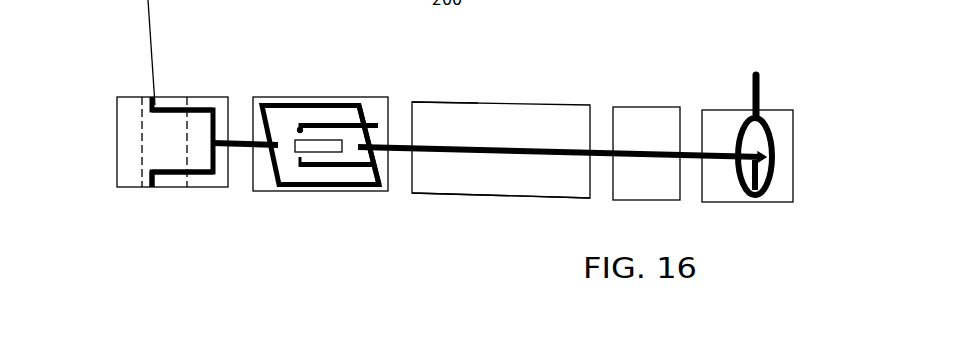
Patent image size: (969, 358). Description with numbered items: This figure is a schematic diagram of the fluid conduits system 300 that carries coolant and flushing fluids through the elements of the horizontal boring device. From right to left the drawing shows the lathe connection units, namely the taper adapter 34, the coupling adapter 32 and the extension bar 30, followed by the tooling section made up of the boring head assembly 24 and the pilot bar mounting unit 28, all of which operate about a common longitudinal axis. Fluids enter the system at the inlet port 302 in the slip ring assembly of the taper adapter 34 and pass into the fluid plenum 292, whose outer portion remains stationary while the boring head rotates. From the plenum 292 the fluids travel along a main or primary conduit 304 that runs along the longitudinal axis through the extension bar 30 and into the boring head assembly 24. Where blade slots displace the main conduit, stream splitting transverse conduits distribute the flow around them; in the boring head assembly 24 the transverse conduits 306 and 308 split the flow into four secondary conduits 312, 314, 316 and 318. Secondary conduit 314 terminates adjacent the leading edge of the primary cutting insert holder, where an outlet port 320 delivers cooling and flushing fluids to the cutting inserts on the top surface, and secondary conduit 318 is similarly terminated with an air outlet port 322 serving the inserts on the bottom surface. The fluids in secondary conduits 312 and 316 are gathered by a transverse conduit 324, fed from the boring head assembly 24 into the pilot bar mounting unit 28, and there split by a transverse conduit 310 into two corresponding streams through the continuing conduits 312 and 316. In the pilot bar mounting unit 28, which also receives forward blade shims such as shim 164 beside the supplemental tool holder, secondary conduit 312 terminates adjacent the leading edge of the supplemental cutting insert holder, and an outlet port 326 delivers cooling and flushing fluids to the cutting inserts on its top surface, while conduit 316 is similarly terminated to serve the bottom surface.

The boring head assembly 24 is at (383, 110).
The pilot bar mounting unit 28 is at (127, 107).
The extension bar 30 is at (553, 123).
The coupling adapter 32 is at (645, 123).
The taper adapter 34 is at (718, 118).
The forward blade shim 164 is at (323, 0).
The fluid plenum 292 is at (774, 143).
The fluid conduits system 300 is at (538, 182).
The inlet port 302 is at (760, 73).
The primary conduit 304 is at (478, 145).
The transverse conduit 306 is at (374, 166).
The transverse conduit 308 is at (382, 175).
The transverse conduit 310 is at (211, 175).
The secondary conduit 312 is at (173, 175).
The secondary conduit 314 is at (307, 126).
The secondary conduit 316 is at (196, 108).
The secondary conduit 318 is at (340, 165).
The outlet port 320 is at (300, 130).
The air outlet port 322 is at (300, 161).
The transverse conduit 324 is at (275, 164).
The outlet port 326 is at (150, 187).